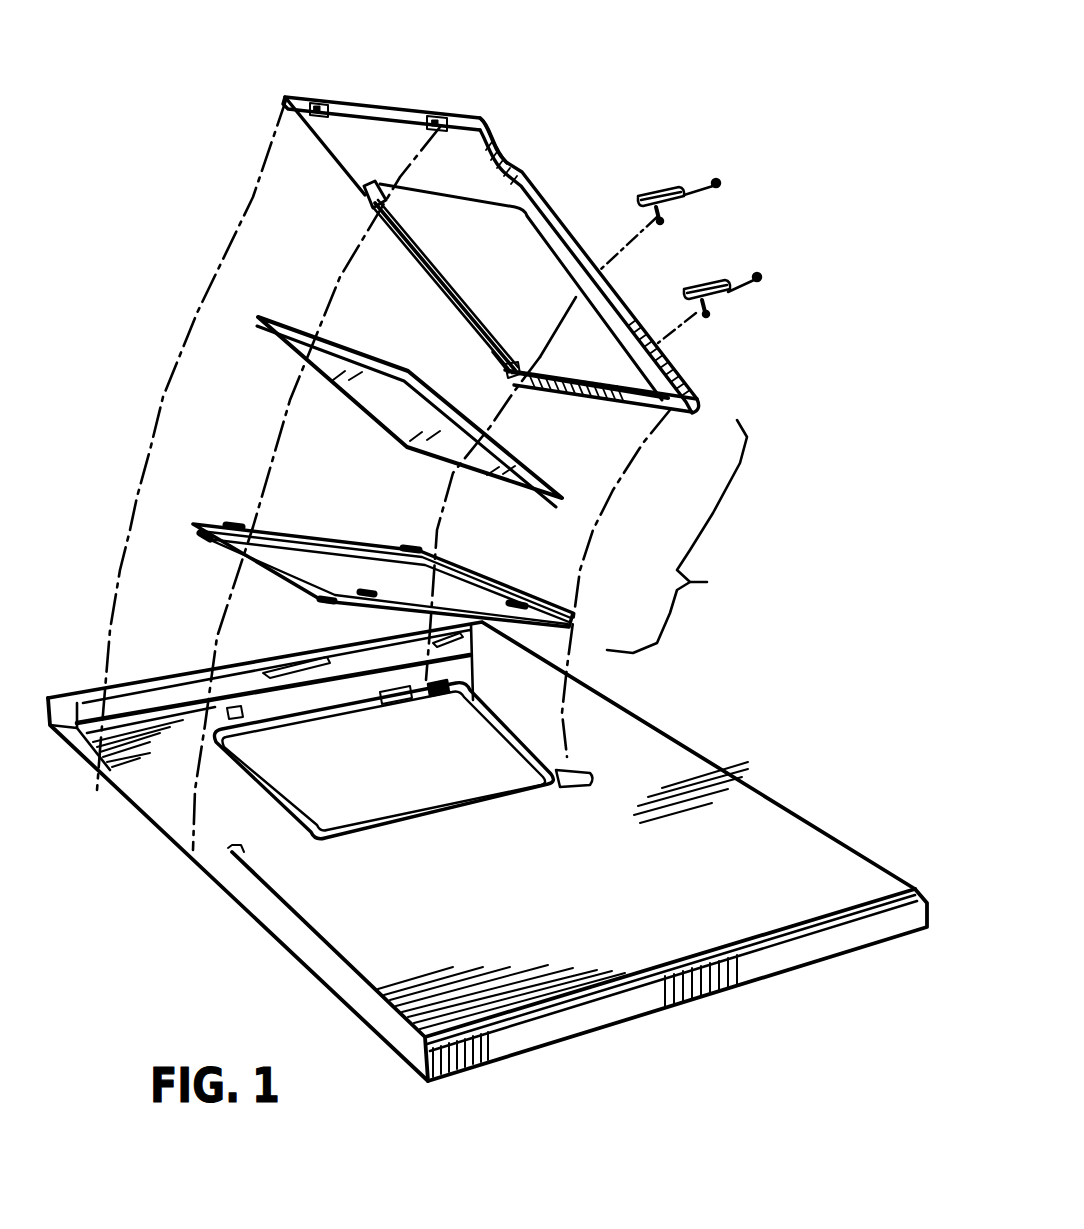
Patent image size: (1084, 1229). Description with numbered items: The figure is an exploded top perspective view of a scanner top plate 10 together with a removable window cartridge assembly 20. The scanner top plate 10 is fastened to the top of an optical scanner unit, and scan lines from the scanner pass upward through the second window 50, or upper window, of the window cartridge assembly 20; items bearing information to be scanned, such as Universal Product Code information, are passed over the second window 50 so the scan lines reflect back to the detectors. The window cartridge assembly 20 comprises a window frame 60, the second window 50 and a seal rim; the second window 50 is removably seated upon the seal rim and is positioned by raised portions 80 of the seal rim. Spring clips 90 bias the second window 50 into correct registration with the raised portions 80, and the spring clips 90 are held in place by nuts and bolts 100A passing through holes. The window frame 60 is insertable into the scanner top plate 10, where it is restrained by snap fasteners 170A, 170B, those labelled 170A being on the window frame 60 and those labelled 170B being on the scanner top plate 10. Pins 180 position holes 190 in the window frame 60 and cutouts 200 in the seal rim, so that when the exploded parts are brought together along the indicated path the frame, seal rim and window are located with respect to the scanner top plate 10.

The scanner top plate 10 is at (735, 790).
The window cartridge assembly 20 is at (677, 536).
The second window 50 is at (533, 466).
The window frame 60 is at (482, 120).
The raised portions 80 is at (230, 520).
The spring clips 90 is at (683, 188).
The nuts and bolts 100A is at (718, 184).
The snap fasteners 170A is at (305, 94).
The snap fasteners 170B is at (397, 698).
The pins 180 is at (434, 696).
The holes 190 is at (507, 367).
The cutouts 200 is at (458, 551).